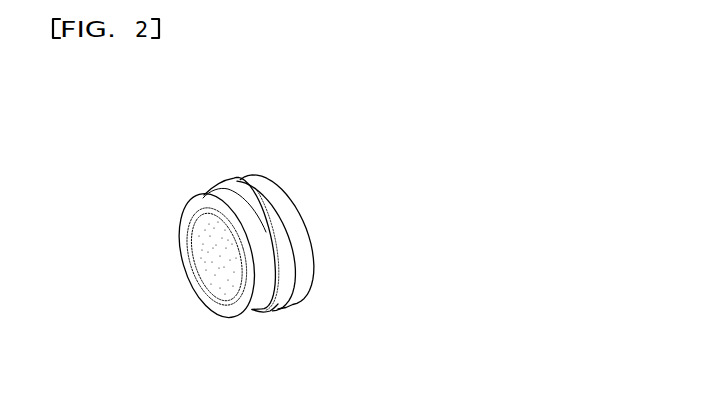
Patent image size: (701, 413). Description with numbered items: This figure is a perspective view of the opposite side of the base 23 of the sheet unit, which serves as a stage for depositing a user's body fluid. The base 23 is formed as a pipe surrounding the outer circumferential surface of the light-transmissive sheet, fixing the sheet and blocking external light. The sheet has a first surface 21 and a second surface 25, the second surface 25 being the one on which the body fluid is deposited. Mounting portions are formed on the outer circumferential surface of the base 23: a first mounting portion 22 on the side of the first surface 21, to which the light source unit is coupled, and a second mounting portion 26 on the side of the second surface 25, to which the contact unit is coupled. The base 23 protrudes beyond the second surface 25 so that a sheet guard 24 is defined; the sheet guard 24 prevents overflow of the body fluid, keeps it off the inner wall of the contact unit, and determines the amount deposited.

The first surface 21 is at (317, 244).
The first mounting portion 22 is at (281, 196).
The base 23 is at (232, 176).
The sheet guard 24 is at (203, 197).
The second surface 25 is at (230, 278).
The second mounting portion 26 is at (268, 309).